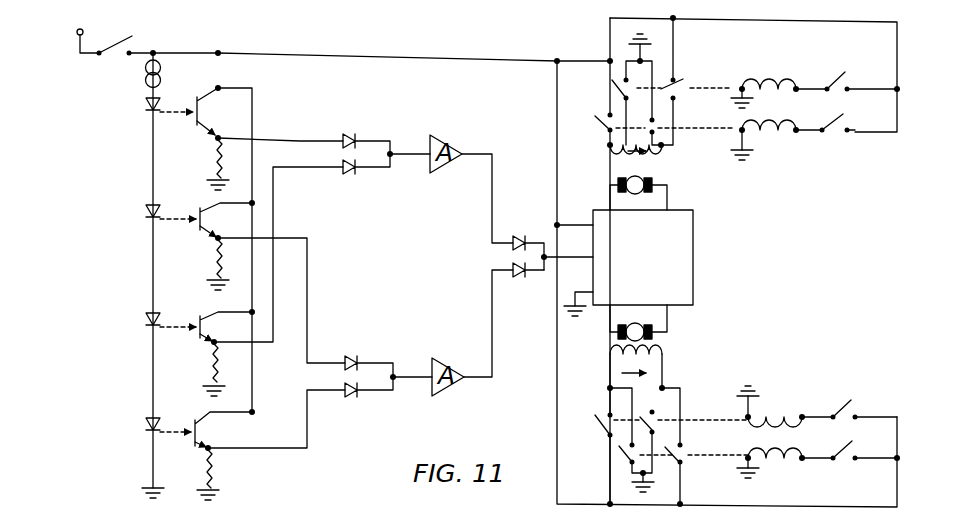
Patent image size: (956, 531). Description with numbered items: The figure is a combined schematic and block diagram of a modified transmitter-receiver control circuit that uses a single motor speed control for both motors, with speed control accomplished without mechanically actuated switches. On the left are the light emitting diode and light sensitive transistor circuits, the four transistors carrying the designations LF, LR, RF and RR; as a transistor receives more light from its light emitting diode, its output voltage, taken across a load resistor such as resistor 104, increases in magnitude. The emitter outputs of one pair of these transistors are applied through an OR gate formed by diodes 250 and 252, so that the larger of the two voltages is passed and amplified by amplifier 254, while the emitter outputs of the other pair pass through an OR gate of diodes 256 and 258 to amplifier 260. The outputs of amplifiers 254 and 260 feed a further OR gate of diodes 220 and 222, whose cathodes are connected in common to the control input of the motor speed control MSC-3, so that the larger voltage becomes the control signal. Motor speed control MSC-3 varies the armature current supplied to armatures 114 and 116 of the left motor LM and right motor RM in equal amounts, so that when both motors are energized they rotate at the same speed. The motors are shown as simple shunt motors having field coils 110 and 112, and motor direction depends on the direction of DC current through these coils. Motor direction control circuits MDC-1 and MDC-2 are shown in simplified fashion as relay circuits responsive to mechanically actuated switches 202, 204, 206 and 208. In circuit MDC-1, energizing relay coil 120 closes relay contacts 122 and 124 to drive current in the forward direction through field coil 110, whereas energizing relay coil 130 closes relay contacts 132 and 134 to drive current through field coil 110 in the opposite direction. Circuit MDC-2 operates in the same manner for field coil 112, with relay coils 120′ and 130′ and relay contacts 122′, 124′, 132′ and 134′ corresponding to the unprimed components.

The left-front transistor LF is at (190, 102).
The left-rear transistor LR is at (204, 208).
The right-front transistor RF is at (208, 315).
The right-rear transistor RR is at (204, 420).
The emitter resistor 104 is at (193, 265).
The diode 250 is at (357, 134).
The diode 252 is at (357, 174).
The amplifier 254 is at (455, 148).
The diode 256 is at (357, 356).
The diode 258 is at (357, 397).
The amplifier 260 is at (472, 356).
The diode 220 is at (523, 236).
The diode 222 is at (522, 277).
The motor speed control circuit MSC-3 is at (673, 215).
The left motor LM is at (652, 181).
The right motor RM is at (652, 338).
The armature 114 is at (618, 189).
The armature 116 is at (618, 338).
The motor direction control circuit MDC-1 is at (762, 180).
The motor direction control circuit MDC-2 is at (776, 330).
The field coil 110 is at (662, 162).
The field coil 112 is at (664, 352).
The relay contact 122 is at (608, 118).
The relay contact 124 is at (640, 119).
The relay contact 132 is at (622, 80).
The relay contact 134 is at (678, 93).
The relay coil 130 is at (770, 80).
The relay coil 120 is at (772, 136).
The mechanically actuated switch 204 is at (850, 86).
The mechanically actuated switch 208 is at (852, 140).
The relay contact 122′ is at (607, 414).
The relay contact 124′ is at (652, 418).
The relay contact 132′ is at (622, 449).
The relay contact 134′ is at (683, 450).
The relay coil 120′ is at (768, 410).
The relay coil 130′ is at (784, 464).
The mechanically actuated switch 202 is at (850, 415).
The mechanically actuated switch 206 is at (840, 470).